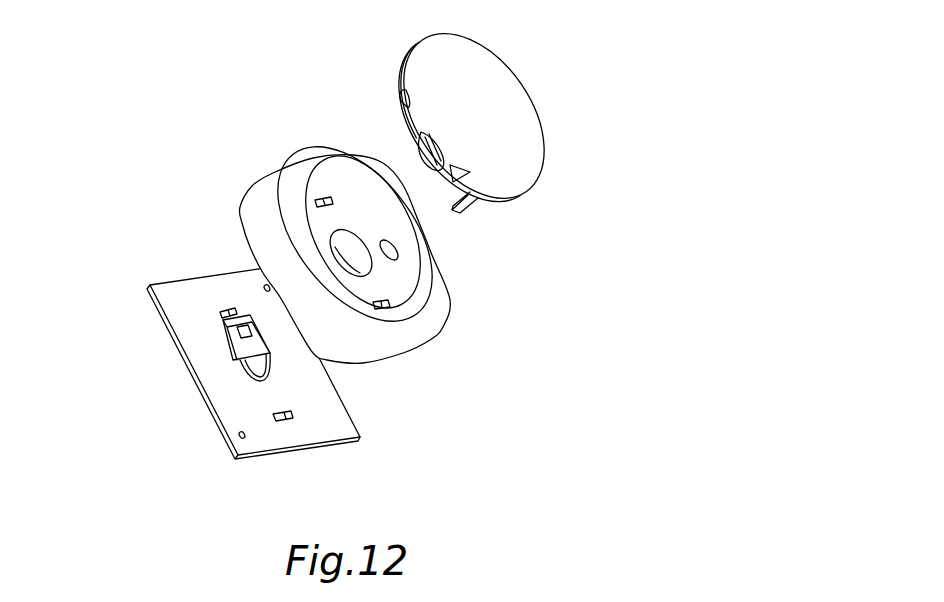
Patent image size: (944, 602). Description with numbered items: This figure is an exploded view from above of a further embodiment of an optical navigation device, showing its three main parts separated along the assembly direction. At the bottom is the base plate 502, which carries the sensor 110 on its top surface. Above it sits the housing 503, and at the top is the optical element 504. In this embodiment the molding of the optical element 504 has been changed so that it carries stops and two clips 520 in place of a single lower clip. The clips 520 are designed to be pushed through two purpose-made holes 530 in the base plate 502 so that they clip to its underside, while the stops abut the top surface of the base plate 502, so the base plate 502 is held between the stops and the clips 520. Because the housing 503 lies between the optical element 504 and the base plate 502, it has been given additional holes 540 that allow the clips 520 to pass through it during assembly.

The sensor 110 is at (250, 348).
The base plate 502 is at (188, 327).
The housing 503 is at (385, 343).
The optical element 504 is at (497, 100).
The clips 520 is at (477, 211).
The holes 530 is at (227, 308).
The holes 540 is at (318, 197).